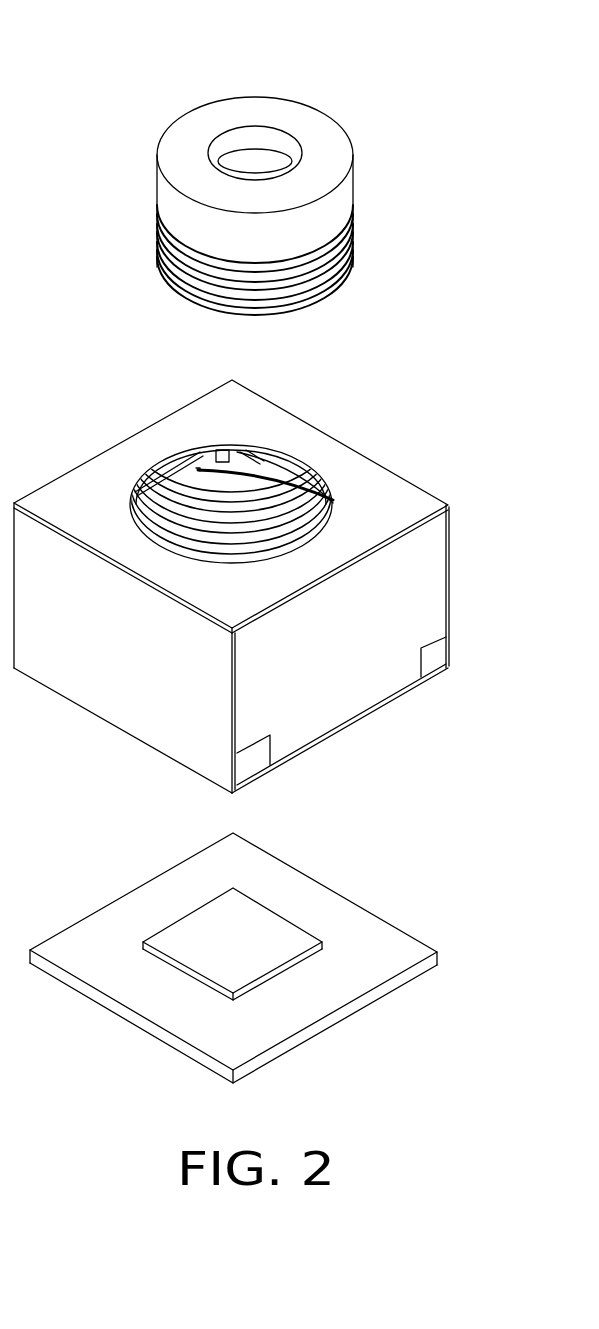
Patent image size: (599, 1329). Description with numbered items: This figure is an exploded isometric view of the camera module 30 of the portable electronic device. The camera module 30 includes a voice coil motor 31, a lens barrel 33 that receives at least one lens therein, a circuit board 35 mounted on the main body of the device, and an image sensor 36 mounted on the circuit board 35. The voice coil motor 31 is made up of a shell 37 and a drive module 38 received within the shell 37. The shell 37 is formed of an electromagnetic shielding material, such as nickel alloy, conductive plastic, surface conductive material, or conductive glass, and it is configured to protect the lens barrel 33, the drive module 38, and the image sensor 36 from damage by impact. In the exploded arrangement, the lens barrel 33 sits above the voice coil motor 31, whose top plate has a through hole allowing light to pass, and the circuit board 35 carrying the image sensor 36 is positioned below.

The camera module 30 is at (282, 38).
The voice coil motor 31 is at (281, 584).
The lens barrel 33 is at (330, 222).
The circuit board 35 is at (405, 973).
The image sensor 36 is at (250, 942).
The shell 37 is at (372, 492).
The drive module 38 is at (268, 467).